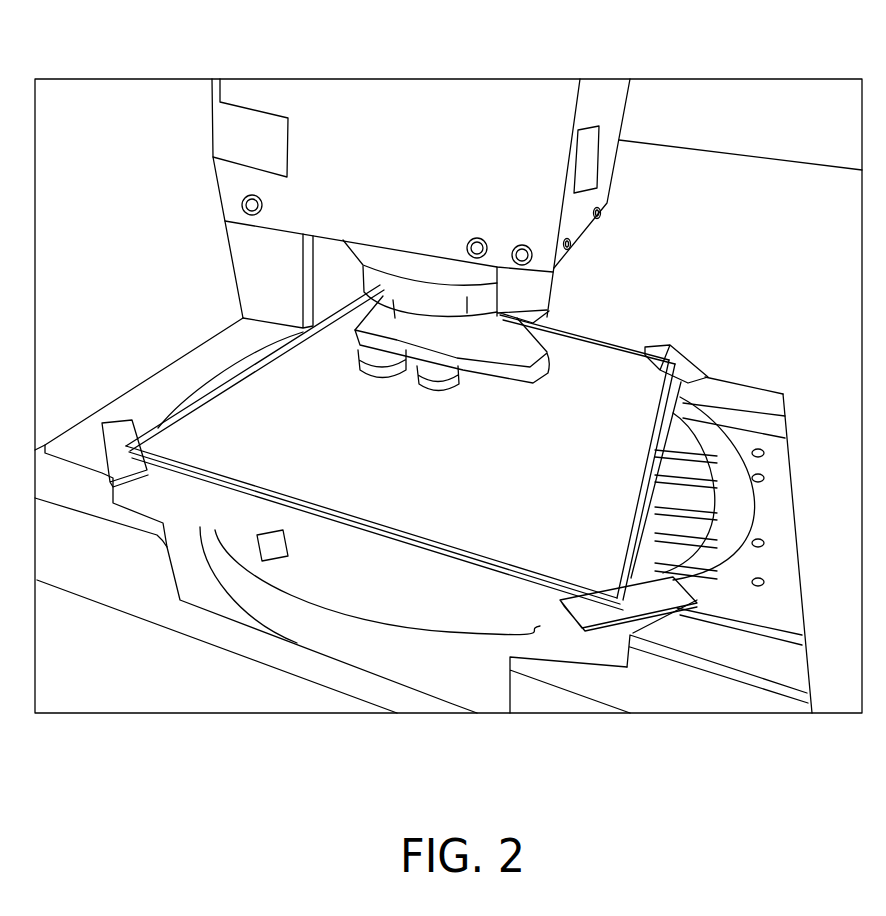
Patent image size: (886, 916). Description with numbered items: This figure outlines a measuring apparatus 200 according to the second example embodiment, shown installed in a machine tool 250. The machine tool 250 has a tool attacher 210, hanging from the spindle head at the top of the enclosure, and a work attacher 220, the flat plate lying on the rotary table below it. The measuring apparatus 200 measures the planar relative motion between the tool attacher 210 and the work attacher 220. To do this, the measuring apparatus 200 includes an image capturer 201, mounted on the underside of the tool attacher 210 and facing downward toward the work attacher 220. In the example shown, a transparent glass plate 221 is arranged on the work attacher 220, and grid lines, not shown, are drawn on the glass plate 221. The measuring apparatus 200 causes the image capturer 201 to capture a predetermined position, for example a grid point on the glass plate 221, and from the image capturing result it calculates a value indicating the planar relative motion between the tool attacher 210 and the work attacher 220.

The machine tool 250 is at (117, 78).
The transparent glass plate 221 is at (618, 337).
The work attacher 220 is at (217, 488).
The tool attacher 210 is at (355, 333).
The image capturer 201 is at (430, 393).
The measuring apparatus 200 is at (393, 395).